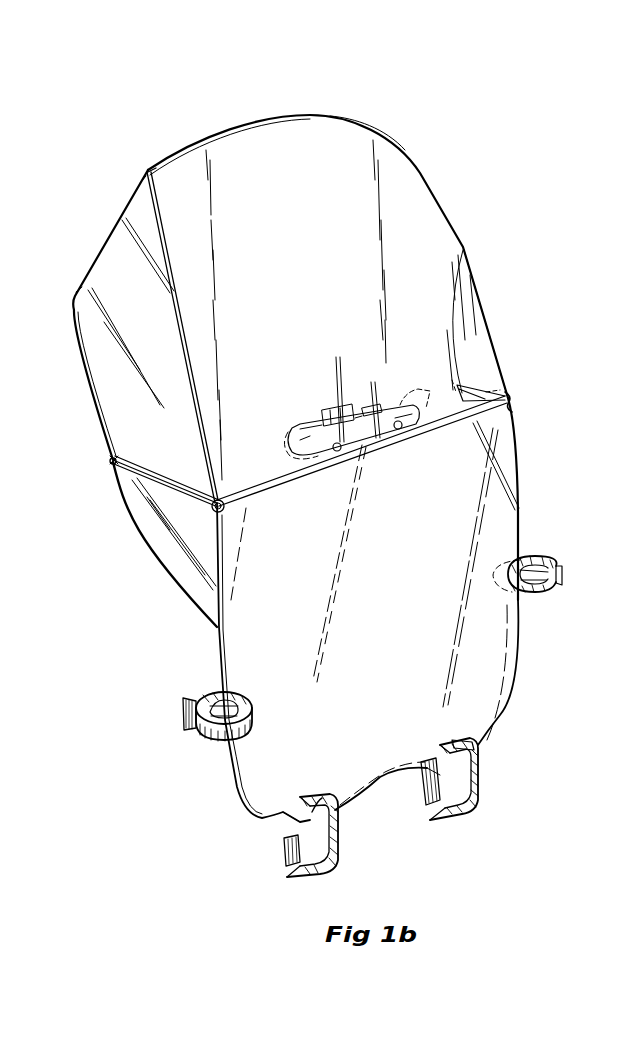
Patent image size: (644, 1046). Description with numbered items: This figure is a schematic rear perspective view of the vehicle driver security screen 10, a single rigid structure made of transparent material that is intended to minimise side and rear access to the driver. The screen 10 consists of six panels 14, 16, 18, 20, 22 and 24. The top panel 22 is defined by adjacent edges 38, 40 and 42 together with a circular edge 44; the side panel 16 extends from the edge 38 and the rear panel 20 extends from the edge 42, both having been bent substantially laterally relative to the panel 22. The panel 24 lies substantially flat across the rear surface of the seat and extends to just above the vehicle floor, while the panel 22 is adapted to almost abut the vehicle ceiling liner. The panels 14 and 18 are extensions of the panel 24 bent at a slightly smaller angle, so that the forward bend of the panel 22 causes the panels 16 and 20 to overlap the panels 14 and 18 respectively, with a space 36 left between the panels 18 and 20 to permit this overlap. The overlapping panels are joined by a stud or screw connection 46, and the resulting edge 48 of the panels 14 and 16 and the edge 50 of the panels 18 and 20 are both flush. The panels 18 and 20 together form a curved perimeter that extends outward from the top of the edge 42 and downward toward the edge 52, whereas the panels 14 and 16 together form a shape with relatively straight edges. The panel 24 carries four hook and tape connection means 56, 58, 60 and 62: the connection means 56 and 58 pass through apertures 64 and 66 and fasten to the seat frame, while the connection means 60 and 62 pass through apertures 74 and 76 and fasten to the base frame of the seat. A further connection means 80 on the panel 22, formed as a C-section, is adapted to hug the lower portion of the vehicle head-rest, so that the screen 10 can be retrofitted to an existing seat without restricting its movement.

The vehicle driver security screen 10 is at (414, 151).
The panel 14 is at (170, 548).
The panel 16 is at (125, 384).
The panel 18 is at (503, 440).
The panel 20 is at (475, 343).
The panel 22 is at (412, 195).
The panel 24 is at (485, 675).
The space 36 is at (514, 398).
The edge 38 is at (183, 318).
The edge 40 is at (392, 453).
The edge 42 is at (480, 285).
The circular edge 44 is at (371, 130).
The stud or screw connection 46 is at (505, 387).
The edge 48 is at (113, 462).
The edge 50 is at (458, 388).
The edge 52 is at (520, 530).
The connection means 56 is at (196, 720).
The connection means 58 is at (555, 575).
The connection means 60 is at (285, 852).
The connection means 62 is at (475, 785).
The aperture 64 is at (233, 700).
The aperture 66 is at (505, 590).
The aperture 74 is at (225, 505).
The aperture 76 is at (460, 745).
The connection means 80 is at (312, 445).